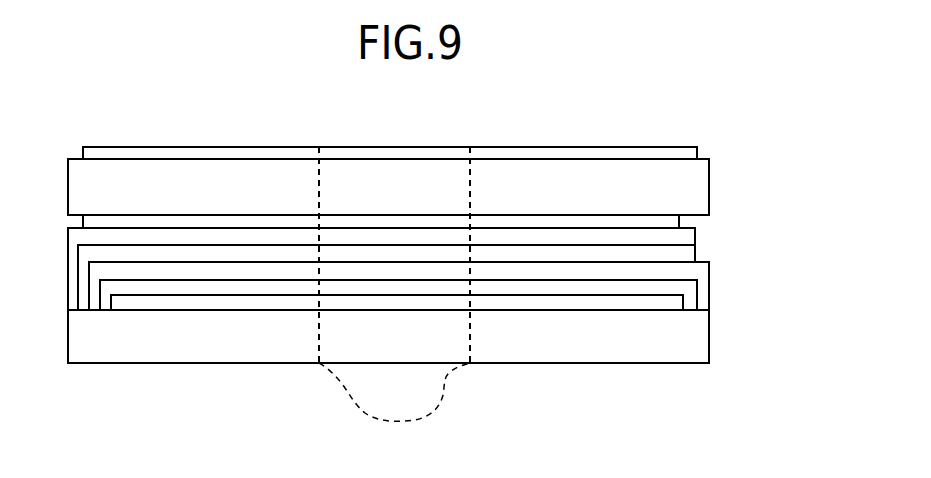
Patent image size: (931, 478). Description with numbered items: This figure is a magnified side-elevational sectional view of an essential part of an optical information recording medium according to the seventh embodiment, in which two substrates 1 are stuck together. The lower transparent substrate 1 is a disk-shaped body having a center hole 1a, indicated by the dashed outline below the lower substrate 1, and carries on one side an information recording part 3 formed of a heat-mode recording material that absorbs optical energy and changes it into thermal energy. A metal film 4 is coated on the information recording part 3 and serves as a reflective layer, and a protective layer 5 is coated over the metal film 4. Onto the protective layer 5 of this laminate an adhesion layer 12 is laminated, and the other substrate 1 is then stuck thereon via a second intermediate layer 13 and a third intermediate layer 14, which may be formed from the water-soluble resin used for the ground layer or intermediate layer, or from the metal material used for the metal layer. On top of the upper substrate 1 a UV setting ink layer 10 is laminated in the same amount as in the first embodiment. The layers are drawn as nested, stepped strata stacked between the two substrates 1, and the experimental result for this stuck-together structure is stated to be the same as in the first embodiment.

The transparent substrate 1 is at (697, 179).
The center hole 1a is at (394, 299).
The information recording part 3 is at (668, 303).
The metal film 4 is at (687, 287).
The protective layer 5 is at (692, 272).
The UV setting ink layer 10 is at (637, 147).
The adhesion layer 12 is at (680, 255).
The second intermediate layer 13 is at (680, 238).
The third intermediate layer 14 is at (692, 219).